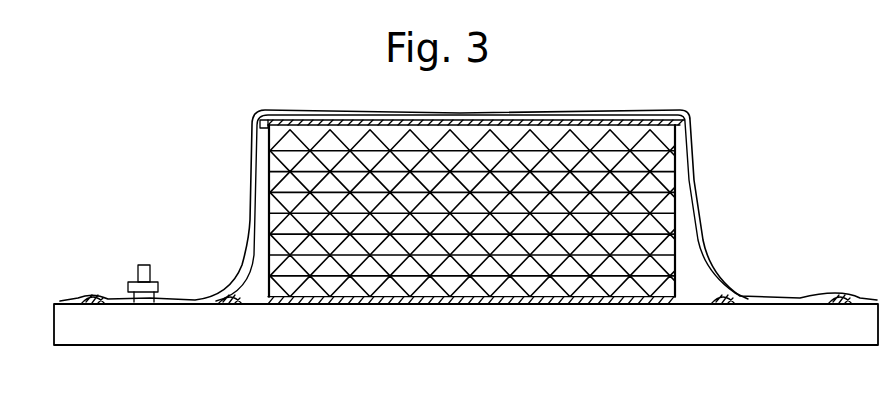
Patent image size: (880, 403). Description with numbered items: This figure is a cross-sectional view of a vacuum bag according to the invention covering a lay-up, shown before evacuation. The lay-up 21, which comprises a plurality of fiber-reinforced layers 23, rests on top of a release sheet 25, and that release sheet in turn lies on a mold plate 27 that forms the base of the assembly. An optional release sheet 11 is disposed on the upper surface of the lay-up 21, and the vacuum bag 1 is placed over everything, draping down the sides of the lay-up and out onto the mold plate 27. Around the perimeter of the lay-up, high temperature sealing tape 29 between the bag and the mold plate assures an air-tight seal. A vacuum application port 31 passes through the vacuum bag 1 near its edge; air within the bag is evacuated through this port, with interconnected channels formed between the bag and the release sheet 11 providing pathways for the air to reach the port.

The vacuum bag 1 is at (246, 222).
The release sheet 11 is at (692, 118).
The lay-up 21 is at (686, 254).
The fiber-reinforced layers 23 is at (622, 242).
The release sheet 25 is at (315, 308).
The mold plate 27 is at (492, 324).
The high temperature sealing tape 29 is at (226, 314).
The vacuum application port 31 is at (135, 268).